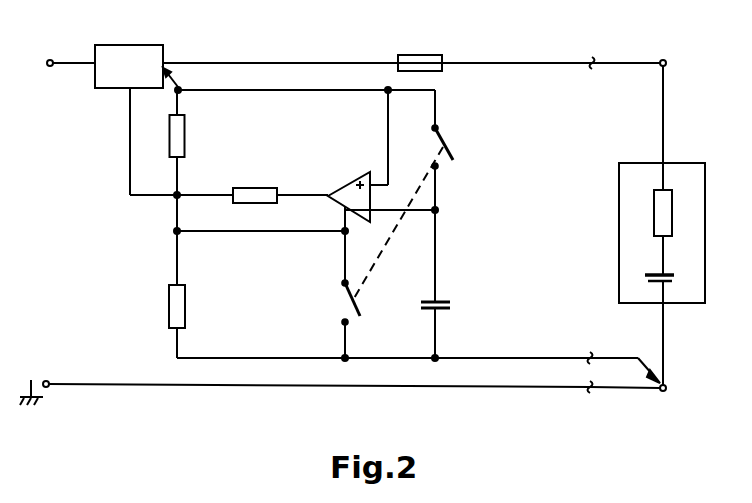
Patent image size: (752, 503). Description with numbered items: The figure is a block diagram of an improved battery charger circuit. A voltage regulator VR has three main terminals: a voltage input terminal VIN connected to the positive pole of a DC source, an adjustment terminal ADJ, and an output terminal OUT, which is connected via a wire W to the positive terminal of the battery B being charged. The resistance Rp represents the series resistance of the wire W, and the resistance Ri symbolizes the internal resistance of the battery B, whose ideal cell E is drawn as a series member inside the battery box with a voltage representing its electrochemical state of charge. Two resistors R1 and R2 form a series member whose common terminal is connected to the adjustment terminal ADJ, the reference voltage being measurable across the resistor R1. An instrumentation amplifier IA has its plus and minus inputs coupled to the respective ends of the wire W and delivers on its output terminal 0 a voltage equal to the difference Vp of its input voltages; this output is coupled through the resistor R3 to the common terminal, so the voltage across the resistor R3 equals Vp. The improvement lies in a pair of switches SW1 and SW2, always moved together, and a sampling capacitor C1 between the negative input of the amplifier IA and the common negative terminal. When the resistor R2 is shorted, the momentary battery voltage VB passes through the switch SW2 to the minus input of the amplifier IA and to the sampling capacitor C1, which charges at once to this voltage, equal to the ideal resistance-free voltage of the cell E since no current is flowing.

The voltage regulator VR is at (127, 53).
The output terminal OUT is at (166, 63).
The voltage input terminal VIN is at (94, 65).
The adjustment terminal ADJ is at (129, 103).
The resistor R1 is at (184, 143).
The resistor R2 is at (186, 318).
The resistor R3 is at (252, 196).
The wire W is at (357, 62).
The series resistance Rp is at (430, 61).
The instrumentation amplifier IA is at (352, 184).
The output terminal 0 is at (302, 194).
The input voltage Vp is at (392, 182).
The switch SW1 is at (329, 319).
The switch SW2 is at (465, 196).
The sampling capacitor C1 is at (452, 305).
The battery B is at (645, 225).
The battery voltage terminal VB is at (664, 163).
The internal resistance Ri is at (665, 218).
The ideal cell E is at (649, 329).